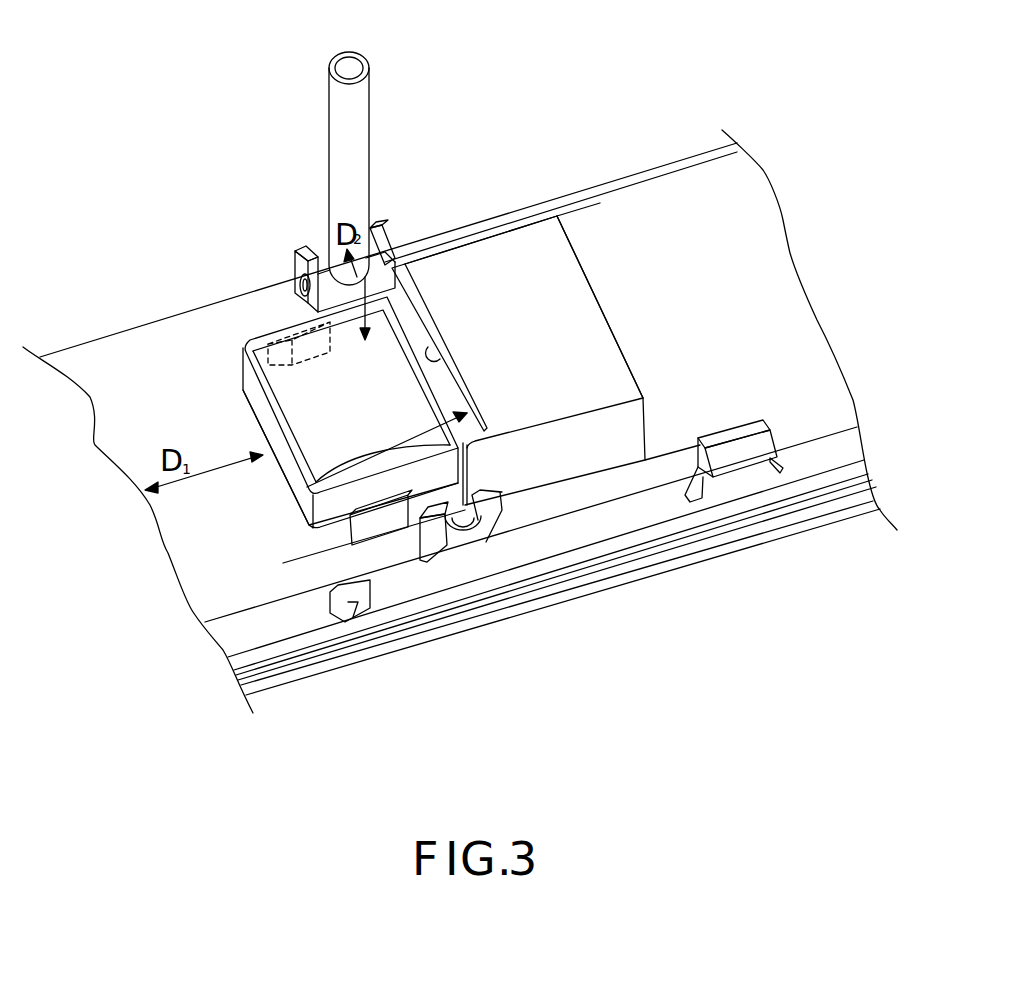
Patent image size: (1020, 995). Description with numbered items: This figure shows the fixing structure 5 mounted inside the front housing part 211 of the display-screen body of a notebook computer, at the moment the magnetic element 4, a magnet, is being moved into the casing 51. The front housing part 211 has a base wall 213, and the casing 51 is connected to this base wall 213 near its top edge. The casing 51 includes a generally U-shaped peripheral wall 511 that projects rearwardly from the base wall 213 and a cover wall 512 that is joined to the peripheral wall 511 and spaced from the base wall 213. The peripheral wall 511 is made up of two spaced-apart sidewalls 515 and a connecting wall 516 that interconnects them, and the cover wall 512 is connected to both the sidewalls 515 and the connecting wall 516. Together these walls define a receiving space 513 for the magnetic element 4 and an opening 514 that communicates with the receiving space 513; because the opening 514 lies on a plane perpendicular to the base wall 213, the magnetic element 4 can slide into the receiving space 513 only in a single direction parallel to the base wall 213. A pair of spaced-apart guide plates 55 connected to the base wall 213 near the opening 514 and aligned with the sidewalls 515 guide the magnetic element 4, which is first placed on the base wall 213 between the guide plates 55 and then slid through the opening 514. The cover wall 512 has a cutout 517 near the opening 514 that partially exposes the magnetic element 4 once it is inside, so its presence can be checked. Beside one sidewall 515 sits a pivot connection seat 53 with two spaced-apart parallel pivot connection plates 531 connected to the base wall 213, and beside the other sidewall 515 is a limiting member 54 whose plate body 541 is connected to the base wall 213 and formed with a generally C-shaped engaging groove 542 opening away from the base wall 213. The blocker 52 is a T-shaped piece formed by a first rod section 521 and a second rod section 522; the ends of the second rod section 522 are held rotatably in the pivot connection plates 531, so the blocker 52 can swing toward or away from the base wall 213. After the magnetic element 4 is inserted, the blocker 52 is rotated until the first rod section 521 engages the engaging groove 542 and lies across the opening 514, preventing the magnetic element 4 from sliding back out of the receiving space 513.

The magnetic element 4 is at (318, 428).
The fixing structure 5 is at (317, 163).
The casing 51 is at (571, 352).
The peripheral wall 511 is at (645, 420).
The cover wall 512 is at (573, 290).
The receiving space 513 is at (445, 338).
The opening 514 is at (312, 493).
The sidewalls 515 is at (433, 252).
The connecting wall 516 is at (607, 320).
The cutout 517 is at (430, 293).
The blocker 52 is at (306, 168).
The first rod section 521 is at (335, 146).
The second rod section 522 is at (325, 272).
The pivot connection seat 53 is at (316, 220).
The pivot connection plates 531 is at (297, 282).
The limiting member 54 is at (520, 601).
The plate body 541 is at (436, 548).
The engaging groove 542 is at (466, 530).
The guide plates 55 is at (240, 360).
The front housing part 211 is at (670, 160).
The base wall 213 is at (725, 213).